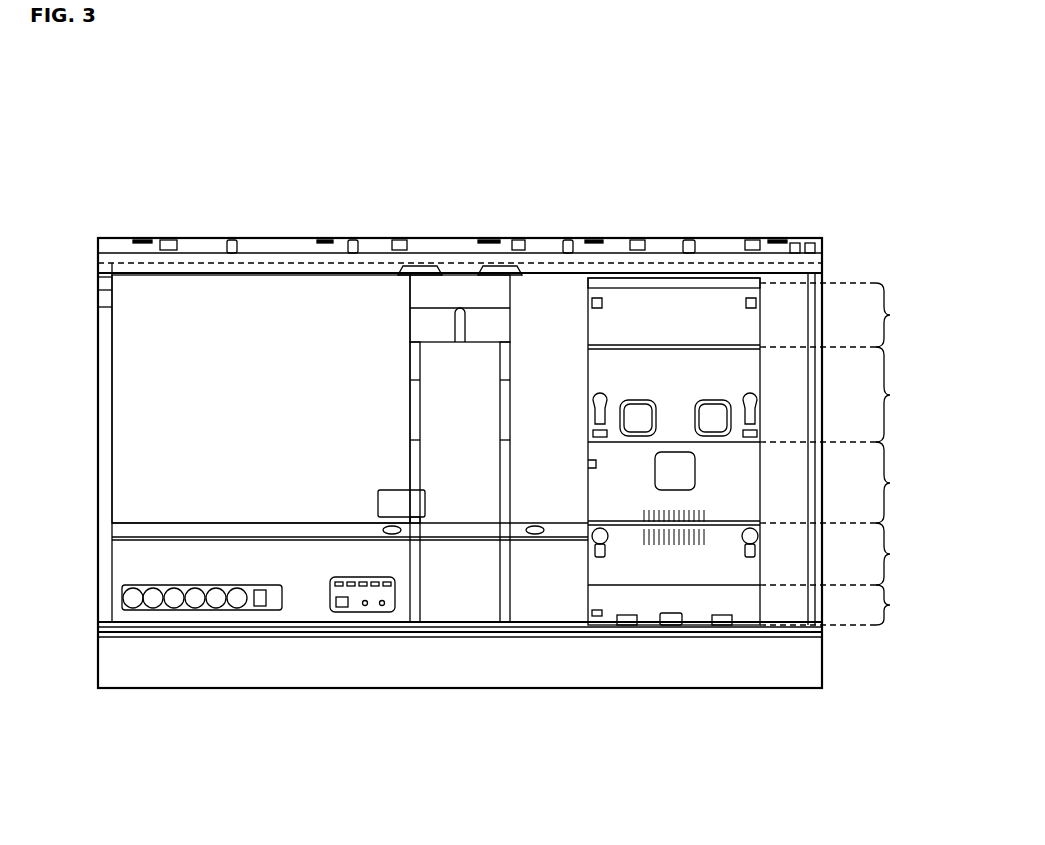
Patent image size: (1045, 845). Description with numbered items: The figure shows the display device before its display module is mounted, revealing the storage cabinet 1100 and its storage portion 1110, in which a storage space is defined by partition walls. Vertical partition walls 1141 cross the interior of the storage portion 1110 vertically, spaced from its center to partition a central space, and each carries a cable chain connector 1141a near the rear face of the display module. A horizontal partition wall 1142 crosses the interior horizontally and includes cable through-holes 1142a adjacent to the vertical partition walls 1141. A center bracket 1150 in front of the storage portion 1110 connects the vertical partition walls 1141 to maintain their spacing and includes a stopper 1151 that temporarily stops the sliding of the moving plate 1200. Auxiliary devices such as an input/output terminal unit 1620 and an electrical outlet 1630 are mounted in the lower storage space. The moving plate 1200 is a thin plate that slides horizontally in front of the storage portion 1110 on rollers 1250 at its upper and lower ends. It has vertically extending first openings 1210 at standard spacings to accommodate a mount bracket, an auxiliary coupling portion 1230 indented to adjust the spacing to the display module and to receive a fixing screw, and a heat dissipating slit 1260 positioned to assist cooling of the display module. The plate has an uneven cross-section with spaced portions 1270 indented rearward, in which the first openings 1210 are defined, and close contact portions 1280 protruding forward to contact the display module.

The storage cabinet 1100 is at (103, 214).
The storage portion 1110 is at (258, 318).
The vertical partition wall 1141 is at (412, 372).
The cable chain connector 1141a is at (420, 503).
The horizontal partition wall 1142 is at (230, 540).
The cable through-hole 1142a is at (393, 536).
The center bracket 1150 is at (437, 325).
The stopper 1151 is at (461, 318).
The moving plate 1200 is at (677, 275).
The first opening 1210 is at (584, 365).
The auxiliary coupling portion 1230 is at (636, 412).
The roller 1250 is at (590, 414).
The heat dissipating slit 1260 is at (675, 552).
The spaced portion 1270 is at (907, 466).
The close contact portion 1280 is at (907, 454).
The input/output terminal unit 1620 is at (357, 612).
The electrical outlet 1630 is at (157, 606).